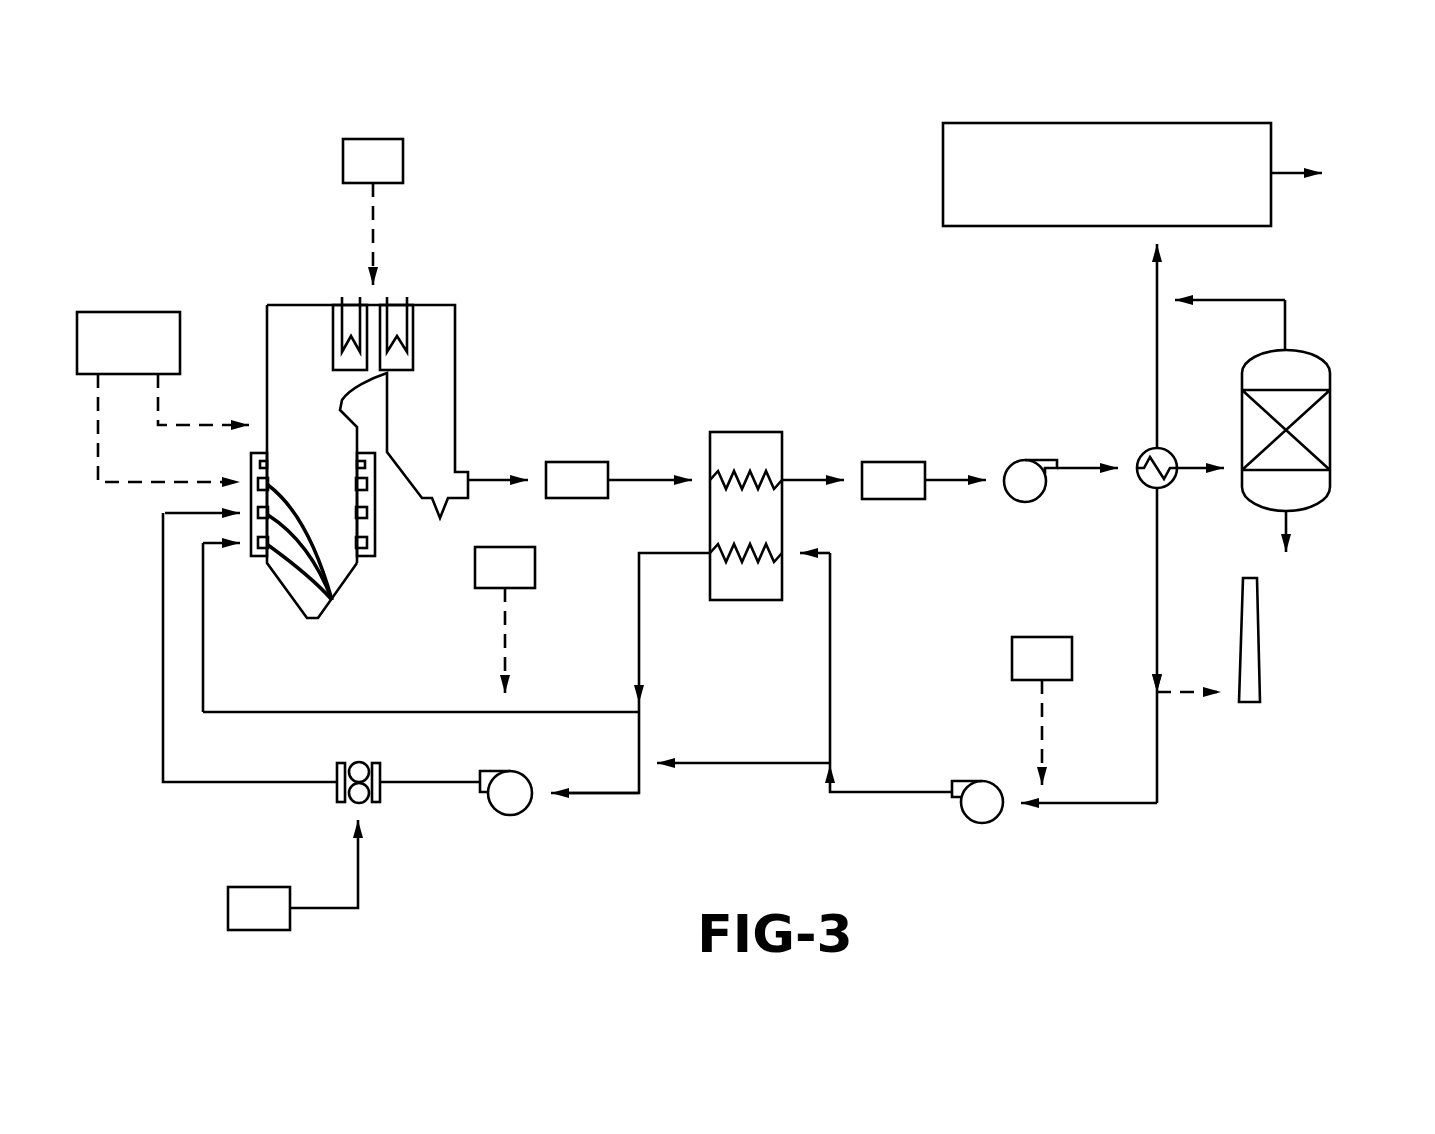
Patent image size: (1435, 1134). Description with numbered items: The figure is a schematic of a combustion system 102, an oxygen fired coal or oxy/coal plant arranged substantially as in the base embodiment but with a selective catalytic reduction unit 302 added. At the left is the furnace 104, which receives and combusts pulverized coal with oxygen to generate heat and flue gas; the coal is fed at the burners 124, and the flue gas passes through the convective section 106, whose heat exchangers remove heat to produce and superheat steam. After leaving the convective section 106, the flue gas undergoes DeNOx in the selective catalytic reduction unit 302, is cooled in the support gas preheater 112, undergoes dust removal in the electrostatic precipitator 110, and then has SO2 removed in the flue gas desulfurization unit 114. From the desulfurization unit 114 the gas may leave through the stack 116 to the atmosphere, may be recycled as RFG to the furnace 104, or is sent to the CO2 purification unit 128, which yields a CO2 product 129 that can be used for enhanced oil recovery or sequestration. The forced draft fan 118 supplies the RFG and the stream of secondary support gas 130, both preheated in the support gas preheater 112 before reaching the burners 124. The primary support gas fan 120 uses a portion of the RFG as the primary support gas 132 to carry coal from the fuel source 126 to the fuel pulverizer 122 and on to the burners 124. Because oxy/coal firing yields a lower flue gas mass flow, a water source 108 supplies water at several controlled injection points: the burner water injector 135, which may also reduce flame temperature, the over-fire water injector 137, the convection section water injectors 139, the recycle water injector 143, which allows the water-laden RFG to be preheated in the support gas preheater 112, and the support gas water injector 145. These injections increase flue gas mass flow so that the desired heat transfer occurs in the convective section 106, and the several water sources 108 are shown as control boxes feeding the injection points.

The combustion system 102 is at (145, 210).
The furnace 104 is at (290, 572).
The convective section 106 is at (338, 290).
The water source 108 is at (574, 409).
The electrostatic precipitator 110 is at (890, 462).
The support gas preheater 112 is at (742, 432).
The flue gas desulfurization unit 114 is at (1335, 400).
The stack 116 is at (1262, 675).
The forced draft fan 118 is at (975, 820).
The primary support gas fan 120 is at (512, 815).
The fuel pulverizer 122 is at (372, 765).
The burners 124 is at (328, 600).
The fuel source 126 is at (293, 875).
The CO2 purification unit 128 is at (1107, 174).
The CO2 product 129 is at (1290, 171).
The secondary support gas 130 is at (580, 711).
The primary support gas 132 is at (590, 797).
The burner water injector 135 is at (132, 483).
The over-fire water injector 137 is at (187, 425).
The convection section water injectors 139 is at (376, 246).
The recycle water injector 143 is at (1042, 740).
The support gas water injector 145 is at (505, 660).
The selective catalytic reduction unit 302 is at (575, 462).